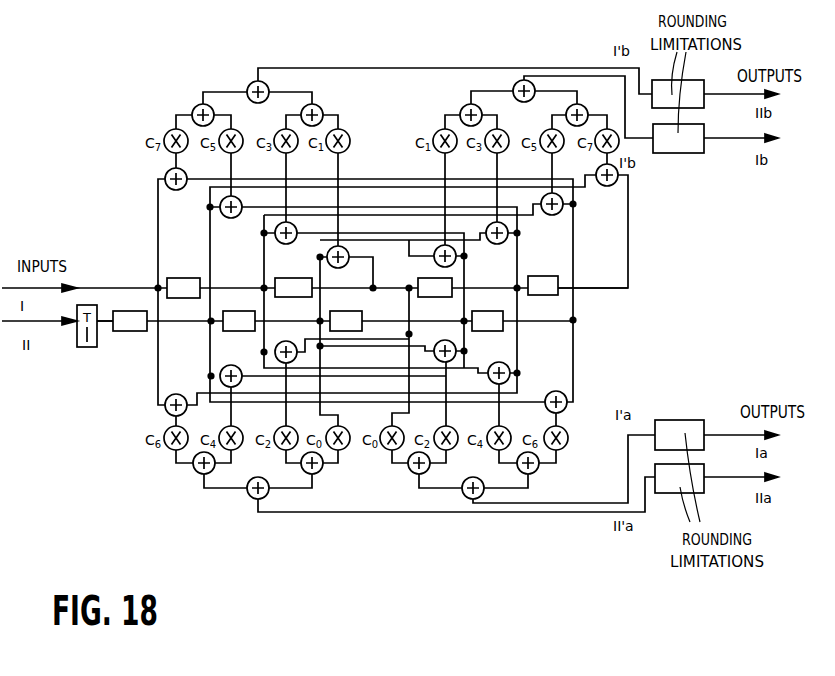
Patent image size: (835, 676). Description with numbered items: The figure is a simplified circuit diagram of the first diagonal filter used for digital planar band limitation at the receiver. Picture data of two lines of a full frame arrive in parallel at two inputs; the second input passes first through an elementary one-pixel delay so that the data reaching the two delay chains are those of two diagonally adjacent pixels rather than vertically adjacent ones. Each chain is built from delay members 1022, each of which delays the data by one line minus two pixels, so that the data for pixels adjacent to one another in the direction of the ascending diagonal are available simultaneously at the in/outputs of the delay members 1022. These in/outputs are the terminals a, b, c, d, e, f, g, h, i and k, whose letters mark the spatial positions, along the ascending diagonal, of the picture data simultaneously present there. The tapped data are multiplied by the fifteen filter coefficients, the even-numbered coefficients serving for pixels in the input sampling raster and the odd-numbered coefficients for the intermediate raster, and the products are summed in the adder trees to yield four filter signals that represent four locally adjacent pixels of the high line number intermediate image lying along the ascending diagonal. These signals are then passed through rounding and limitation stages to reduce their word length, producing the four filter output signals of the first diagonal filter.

The delay member τ 1022 is at (337, 316).
The delay chain terminal a is at (105, 309).
The delay chain terminal b is at (149, 280).
The delay chain terminal c is at (205, 330).
The delay chain terminal d is at (259, 280).
The delay chain terminal e is at (315, 328).
The delay chain terminal f is at (402, 278).
The delay chain terminal g is at (458, 327).
The delay chain terminal h is at (508, 278).
The delay chain terminal i is at (576, 325).
The delay chain terminal k is at (593, 276).